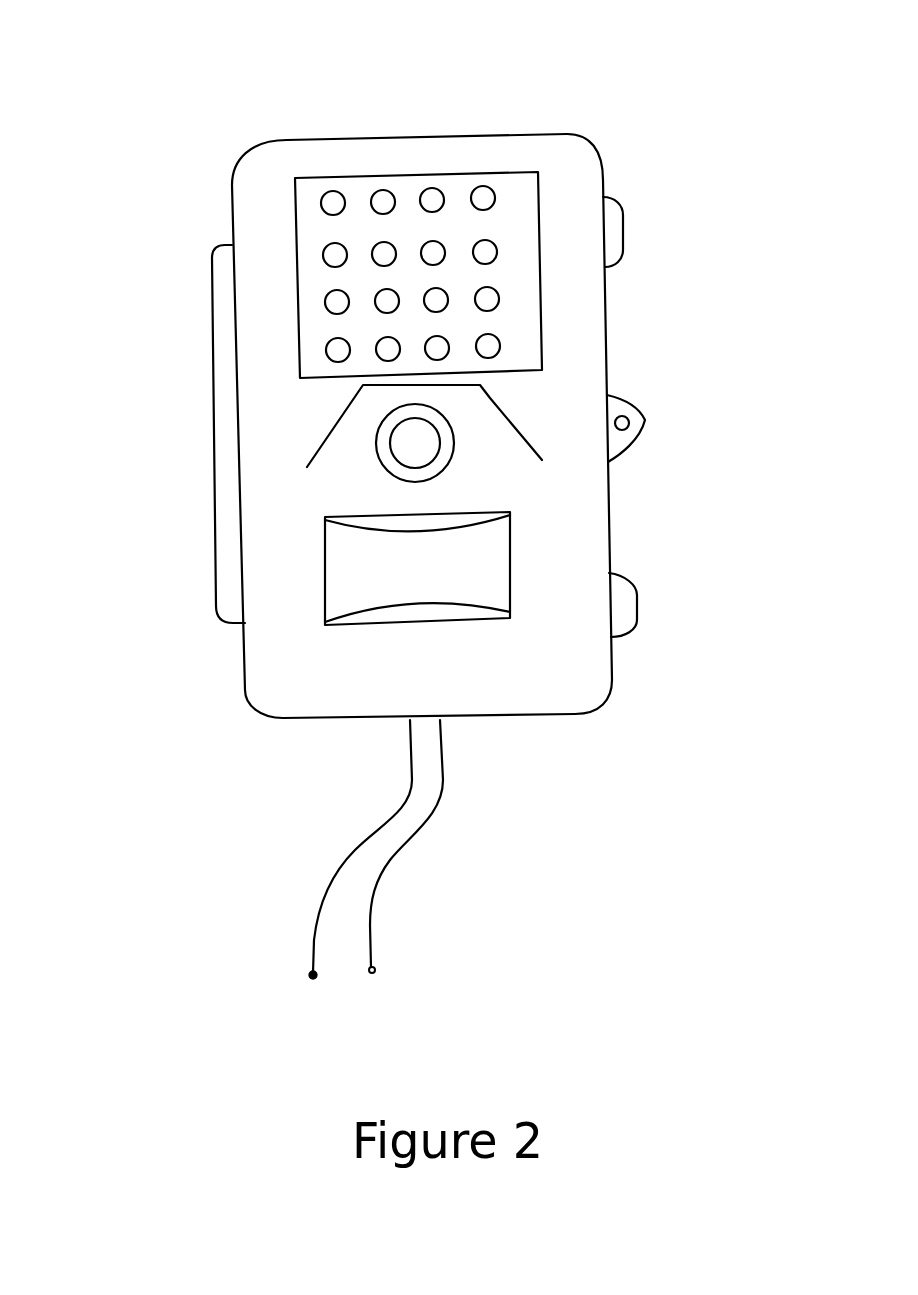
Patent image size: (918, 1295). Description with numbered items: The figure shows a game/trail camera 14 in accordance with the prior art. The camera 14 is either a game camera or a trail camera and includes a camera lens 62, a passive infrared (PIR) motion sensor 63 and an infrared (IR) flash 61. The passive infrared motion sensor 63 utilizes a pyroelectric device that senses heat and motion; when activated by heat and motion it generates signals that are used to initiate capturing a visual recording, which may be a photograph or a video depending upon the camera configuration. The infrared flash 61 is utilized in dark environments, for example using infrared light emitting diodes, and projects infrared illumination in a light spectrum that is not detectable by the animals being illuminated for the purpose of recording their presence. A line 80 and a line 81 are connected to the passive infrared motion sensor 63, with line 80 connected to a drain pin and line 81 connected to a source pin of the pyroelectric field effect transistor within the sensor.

The camera 14 is at (603, 177).
The infrared flash 61 is at (297, 248).
The camera lens 62 is at (377, 452).
The passive infrared (PIR) motion sensor 63 is at (325, 594).
The line 80 is at (313, 942).
The line 81 is at (374, 928).